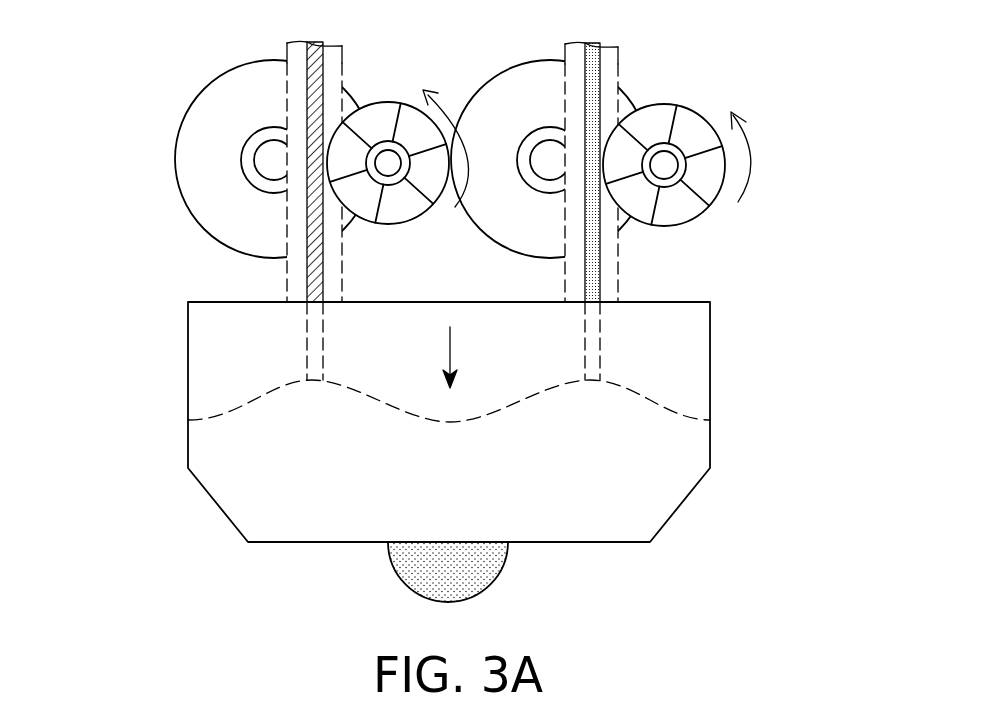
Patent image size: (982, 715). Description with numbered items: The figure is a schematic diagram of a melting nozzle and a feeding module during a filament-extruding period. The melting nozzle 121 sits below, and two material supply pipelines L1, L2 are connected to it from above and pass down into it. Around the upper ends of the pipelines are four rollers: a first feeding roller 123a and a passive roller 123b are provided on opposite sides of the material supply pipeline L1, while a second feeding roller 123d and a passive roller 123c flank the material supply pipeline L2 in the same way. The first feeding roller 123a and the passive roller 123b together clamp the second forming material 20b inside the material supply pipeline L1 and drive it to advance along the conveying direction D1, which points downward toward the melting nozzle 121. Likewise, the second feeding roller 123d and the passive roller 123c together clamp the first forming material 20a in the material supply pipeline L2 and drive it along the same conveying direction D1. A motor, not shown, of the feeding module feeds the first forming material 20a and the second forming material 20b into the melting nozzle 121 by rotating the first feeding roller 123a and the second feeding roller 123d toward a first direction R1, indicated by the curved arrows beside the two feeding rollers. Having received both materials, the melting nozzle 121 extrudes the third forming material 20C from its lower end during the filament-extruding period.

The melting nozzle 121 is at (188, 354).
The first feeding roller 123a is at (352, 200).
The passive roller 123b is at (193, 152).
The passive roller 123c is at (621, 89).
The second feeding roller 123d is at (678, 217).
The first forming material 20a is at (597, 63).
The second forming material 20b is at (317, 68).
The third forming material 20C is at (478, 572).
The material supply pipeline L1 is at (287, 53).
The material supply pipeline L2 is at (618, 77).
The first direction R1 is at (448, 105).
The conveying direction D1 is at (450, 352).